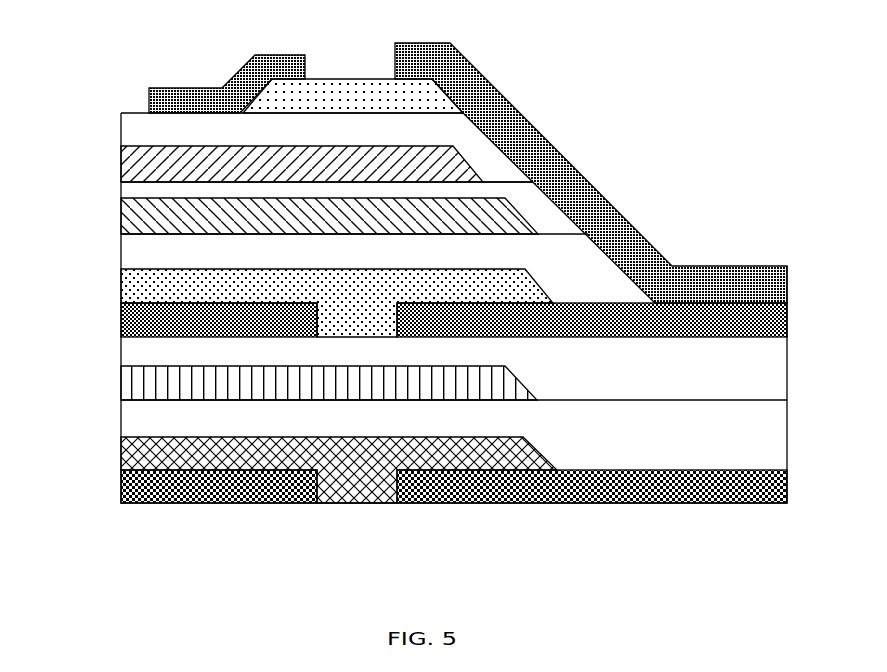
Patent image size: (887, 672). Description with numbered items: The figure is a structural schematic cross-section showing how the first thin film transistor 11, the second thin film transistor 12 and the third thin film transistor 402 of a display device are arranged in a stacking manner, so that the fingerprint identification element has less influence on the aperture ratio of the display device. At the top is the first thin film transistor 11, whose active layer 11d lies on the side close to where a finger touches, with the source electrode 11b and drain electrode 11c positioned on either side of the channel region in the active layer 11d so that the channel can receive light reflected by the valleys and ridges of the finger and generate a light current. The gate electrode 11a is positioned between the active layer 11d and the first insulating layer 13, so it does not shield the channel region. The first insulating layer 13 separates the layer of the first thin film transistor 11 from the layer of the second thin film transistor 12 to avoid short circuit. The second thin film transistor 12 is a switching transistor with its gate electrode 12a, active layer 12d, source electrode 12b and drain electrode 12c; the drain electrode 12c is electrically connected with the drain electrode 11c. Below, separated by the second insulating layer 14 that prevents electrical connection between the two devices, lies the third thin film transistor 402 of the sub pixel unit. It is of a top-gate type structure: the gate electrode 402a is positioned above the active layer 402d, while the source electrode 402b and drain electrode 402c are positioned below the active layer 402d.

The first thin film transistor 11 is at (53, 53).
The gate electrode of the first thin film transistor 11a is at (135, 162).
The source electrode of the first thin film transistor 11b is at (237, 70).
The drain electrode of the first thin film transistor 11c is at (493, 88).
The active layer of the first thin film transistor 11d is at (343, 90).
The second thin film transistor 12 is at (53, 205).
The gate electrode of the second thin film transistor 12a is at (133, 216).
The source electrode of the second thin film transistor 12b is at (132, 322).
The drain electrode of the second thin film transistor 12c is at (753, 321).
The active layer of the second thin film transistor 12d is at (140, 287).
The first insulating layer 13 is at (135, 189).
The second insulating layer 14 is at (762, 376).
The third thin film transistor 402 is at (50, 373).
The gate electrode of the third thin film transistor 402a is at (138, 388).
The source electrode of the third thin film transistor 402b is at (182, 499).
The drain electrode of the third thin film transistor 402c is at (540, 500).
The active layer of the third thin film transistor 402d is at (352, 485).